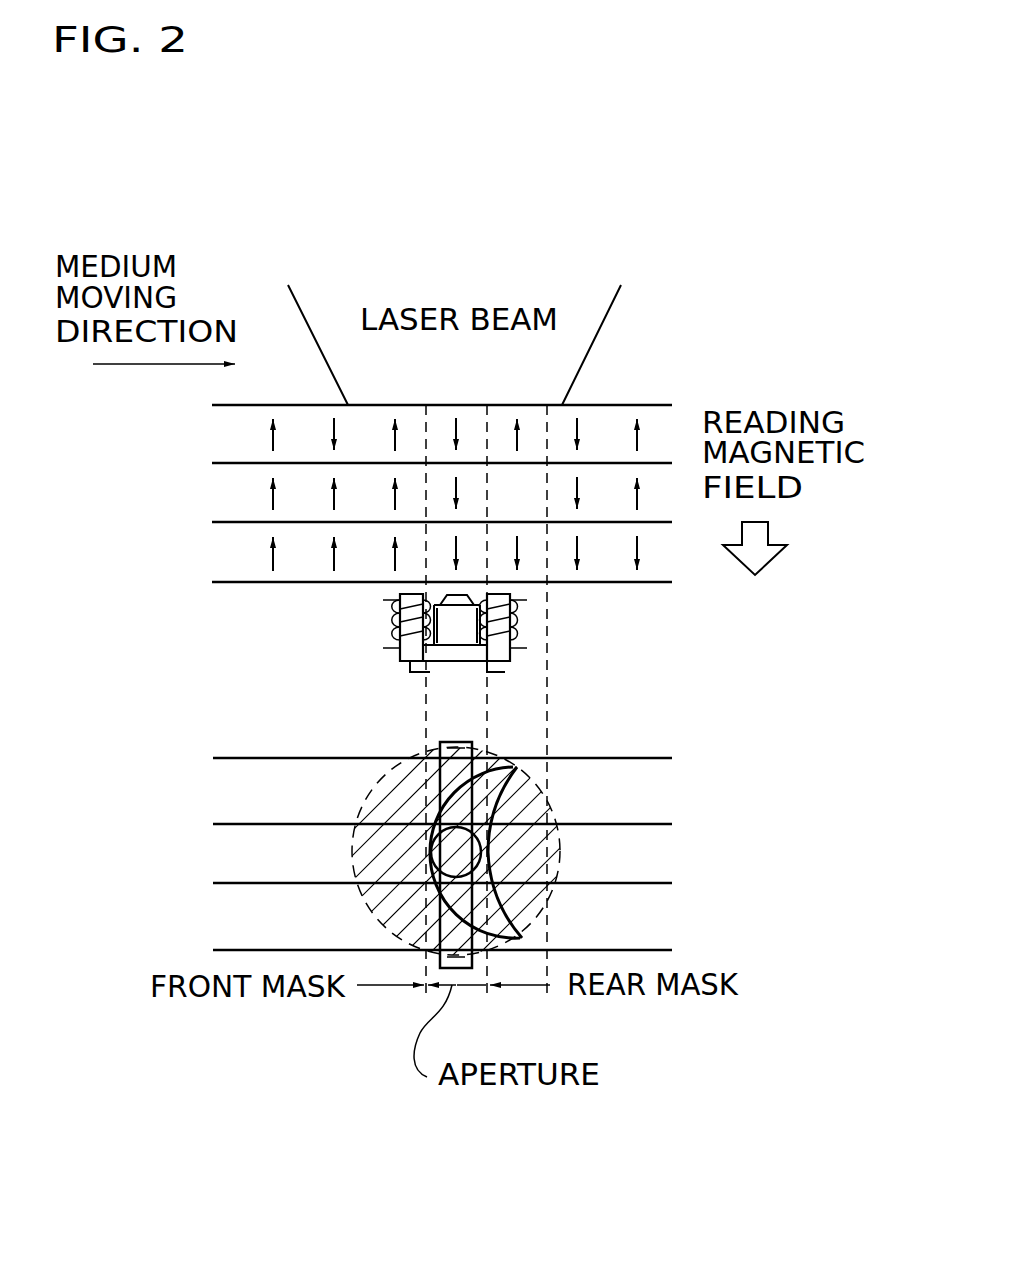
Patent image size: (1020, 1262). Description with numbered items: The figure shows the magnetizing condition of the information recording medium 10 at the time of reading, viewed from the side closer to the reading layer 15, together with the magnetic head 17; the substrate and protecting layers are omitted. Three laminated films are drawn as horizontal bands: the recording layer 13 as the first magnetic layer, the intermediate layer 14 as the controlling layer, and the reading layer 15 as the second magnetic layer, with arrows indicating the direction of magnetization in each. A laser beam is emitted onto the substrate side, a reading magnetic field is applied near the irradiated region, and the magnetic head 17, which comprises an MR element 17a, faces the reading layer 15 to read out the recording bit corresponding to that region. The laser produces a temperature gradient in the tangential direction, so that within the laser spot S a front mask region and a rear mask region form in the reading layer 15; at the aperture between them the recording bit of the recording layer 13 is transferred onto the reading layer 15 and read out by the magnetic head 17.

The information recording medium 10 is at (669, 350).
The recording layer 13 is at (240, 445).
The intermediate layer 14 is at (223, 500).
The reading layer 15 is at (225, 559).
The magnetic head 17 is at (471, 668).
The MR element 17a is at (458, 610).
The laser spot S is at (386, 774).